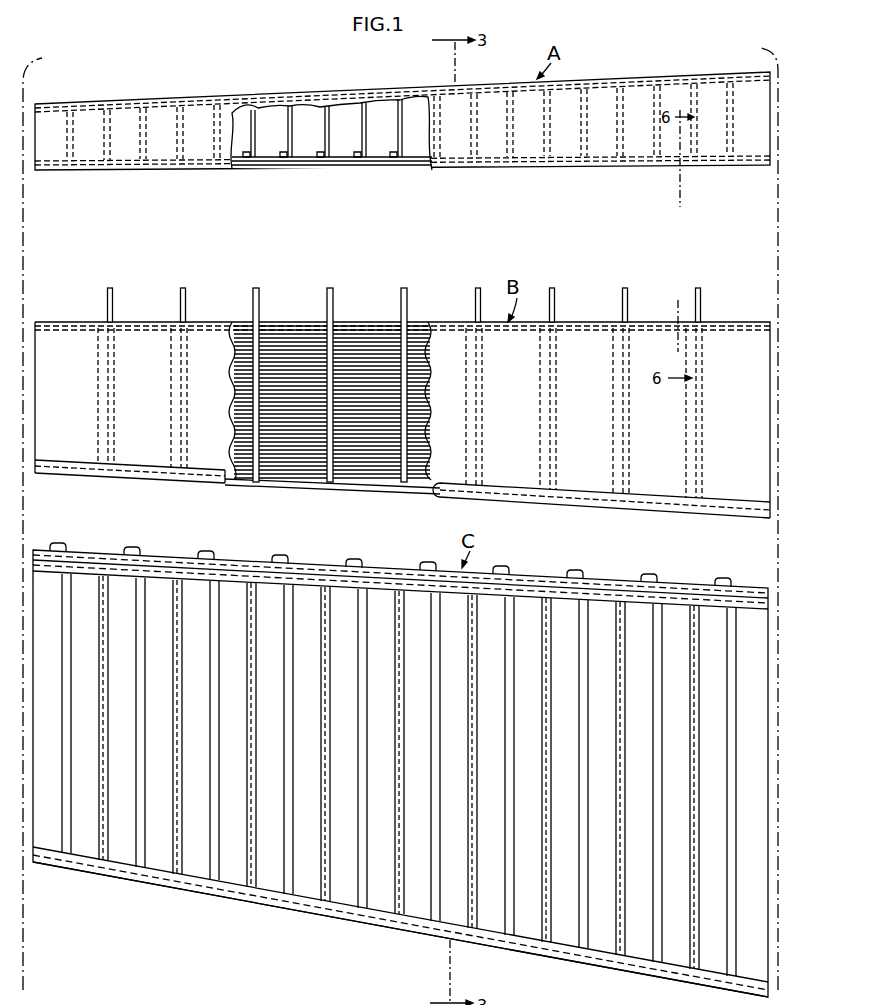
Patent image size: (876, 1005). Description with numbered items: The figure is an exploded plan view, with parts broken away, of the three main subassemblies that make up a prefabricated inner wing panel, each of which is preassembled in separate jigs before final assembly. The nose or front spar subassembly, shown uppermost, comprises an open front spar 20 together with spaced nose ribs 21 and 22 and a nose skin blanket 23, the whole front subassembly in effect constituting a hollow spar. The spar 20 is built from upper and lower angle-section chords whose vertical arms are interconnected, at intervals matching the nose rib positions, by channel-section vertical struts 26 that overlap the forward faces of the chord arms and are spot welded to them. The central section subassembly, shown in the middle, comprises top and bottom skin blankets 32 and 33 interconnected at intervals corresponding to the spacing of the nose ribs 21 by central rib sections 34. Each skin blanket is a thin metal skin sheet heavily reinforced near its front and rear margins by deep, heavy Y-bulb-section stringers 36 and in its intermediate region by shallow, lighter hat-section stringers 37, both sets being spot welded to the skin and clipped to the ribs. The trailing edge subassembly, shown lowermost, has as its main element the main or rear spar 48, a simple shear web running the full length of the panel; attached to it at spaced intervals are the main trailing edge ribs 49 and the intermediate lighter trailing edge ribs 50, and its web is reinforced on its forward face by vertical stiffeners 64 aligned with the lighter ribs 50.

The open front spar 20 is at (342, 163).
The nose rib 21 is at (256, 136).
The nose rib 22 is at (292, 134).
The nose skin blanket 23 is at (171, 106).
The vertical strut 26 is at (246, 151).
The top skin blanket 32 is at (526, 386).
The bottom skin blanket 33 is at (365, 348).
The central rib section 34 is at (252, 406).
The stringer 36 is at (290, 348).
The stringer 37 is at (272, 388).
The main or rear spar 48 is at (333, 567).
The main trailing edge rib 49 is at (542, 925).
The intermediate trailing edge rib 50 is at (432, 894).
The vertical stiffener 64 is at (572, 574).